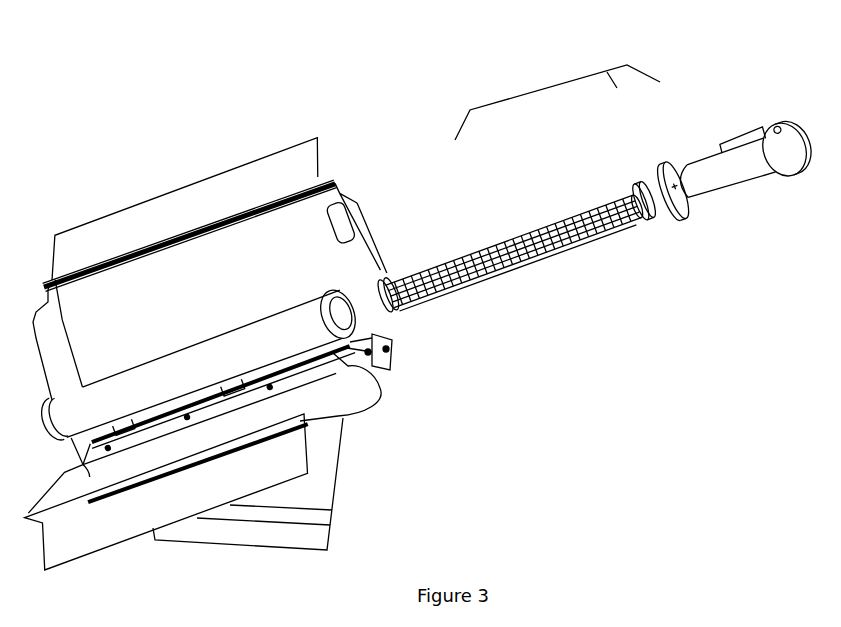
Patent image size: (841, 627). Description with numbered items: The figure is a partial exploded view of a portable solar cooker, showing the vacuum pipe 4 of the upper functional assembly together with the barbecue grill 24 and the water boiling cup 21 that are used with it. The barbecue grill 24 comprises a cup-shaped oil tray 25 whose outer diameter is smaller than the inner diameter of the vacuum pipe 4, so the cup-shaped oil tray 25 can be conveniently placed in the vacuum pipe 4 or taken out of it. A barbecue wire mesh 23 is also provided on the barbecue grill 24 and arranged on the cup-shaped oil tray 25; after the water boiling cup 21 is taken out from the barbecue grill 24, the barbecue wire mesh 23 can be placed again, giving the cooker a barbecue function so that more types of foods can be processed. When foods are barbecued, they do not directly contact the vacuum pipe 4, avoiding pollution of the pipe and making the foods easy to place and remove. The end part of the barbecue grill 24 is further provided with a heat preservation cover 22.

The vacuum pipe 4 is at (189, 370).
The water boiling cup 21 is at (715, 163).
The heat preservation cover 22 is at (668, 167).
The barbecue wire mesh 23 is at (442, 263).
The barbecue grill 24 is at (548, 87).
The cup-shaped oil tray 25 is at (635, 190).